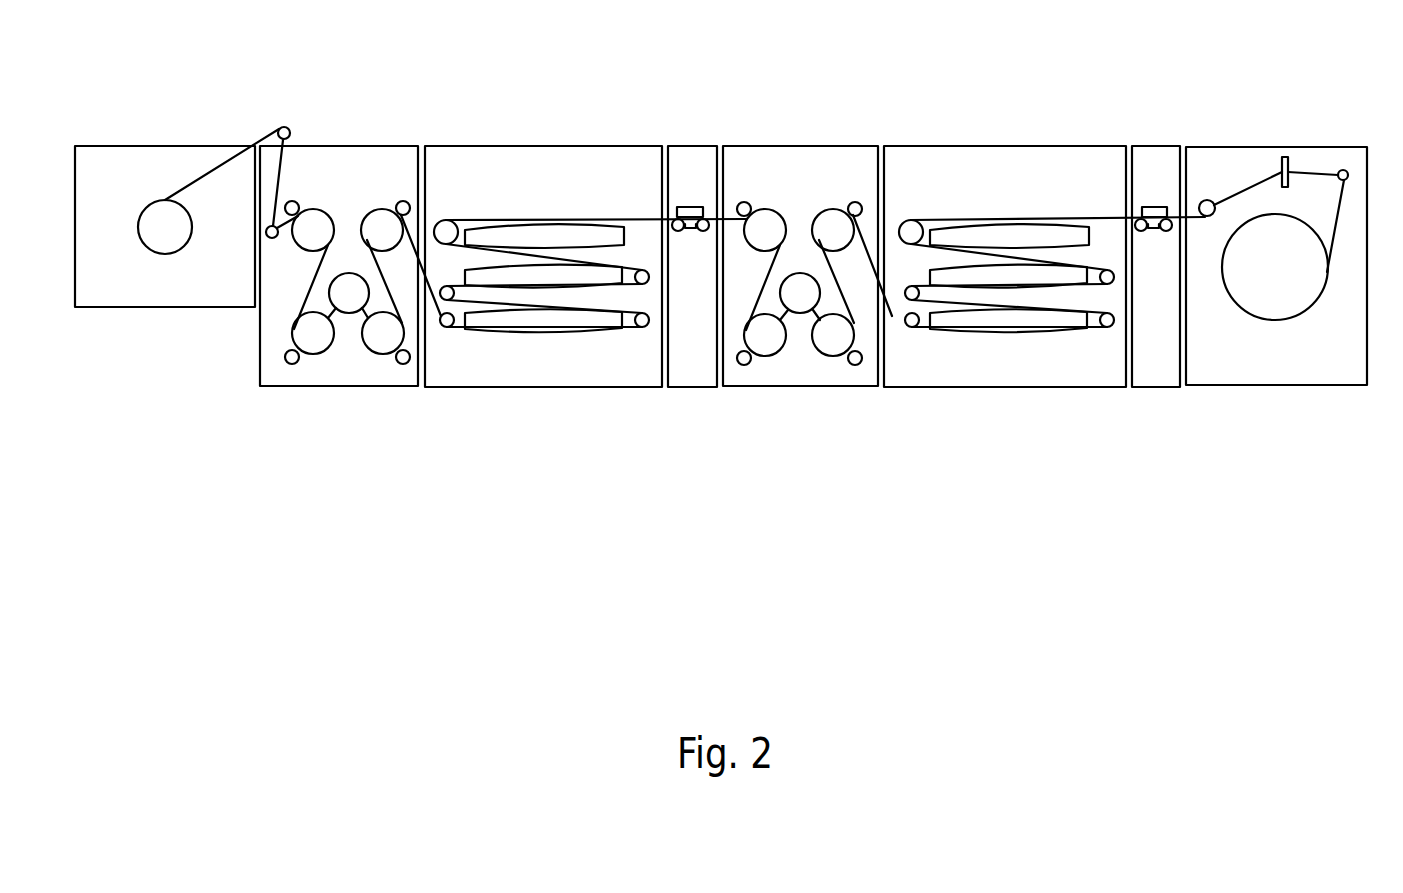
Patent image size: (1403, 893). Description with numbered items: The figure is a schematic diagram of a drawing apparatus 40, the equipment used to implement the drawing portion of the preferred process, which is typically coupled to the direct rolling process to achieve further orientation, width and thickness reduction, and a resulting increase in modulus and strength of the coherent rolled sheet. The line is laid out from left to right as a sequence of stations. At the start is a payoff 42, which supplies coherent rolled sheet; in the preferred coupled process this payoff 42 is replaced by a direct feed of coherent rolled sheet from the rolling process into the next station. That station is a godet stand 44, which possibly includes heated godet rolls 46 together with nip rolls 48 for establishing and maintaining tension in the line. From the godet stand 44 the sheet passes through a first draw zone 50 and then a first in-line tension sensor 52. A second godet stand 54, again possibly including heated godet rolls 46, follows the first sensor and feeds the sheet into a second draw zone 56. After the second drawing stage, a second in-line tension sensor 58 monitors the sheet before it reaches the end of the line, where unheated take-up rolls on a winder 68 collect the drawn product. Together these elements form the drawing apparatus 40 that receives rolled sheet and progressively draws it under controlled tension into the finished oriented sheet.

The drawing apparatus 40 is at (721, 327).
The payoff 42 is at (128, 146).
The godet stand 44 is at (400, 155).
The heated godet rolls 46 is at (382, 230).
The nip rolls 48 is at (401, 201).
The first draw zone 50 is at (558, 158).
The first in-line tension sensor 52 is at (690, 162).
The second godet stand 54 is at (862, 155).
The second draw zone 56 is at (997, 158).
The second in-line tension sensor 58 is at (1157, 158).
The winder 68 is at (1248, 158).